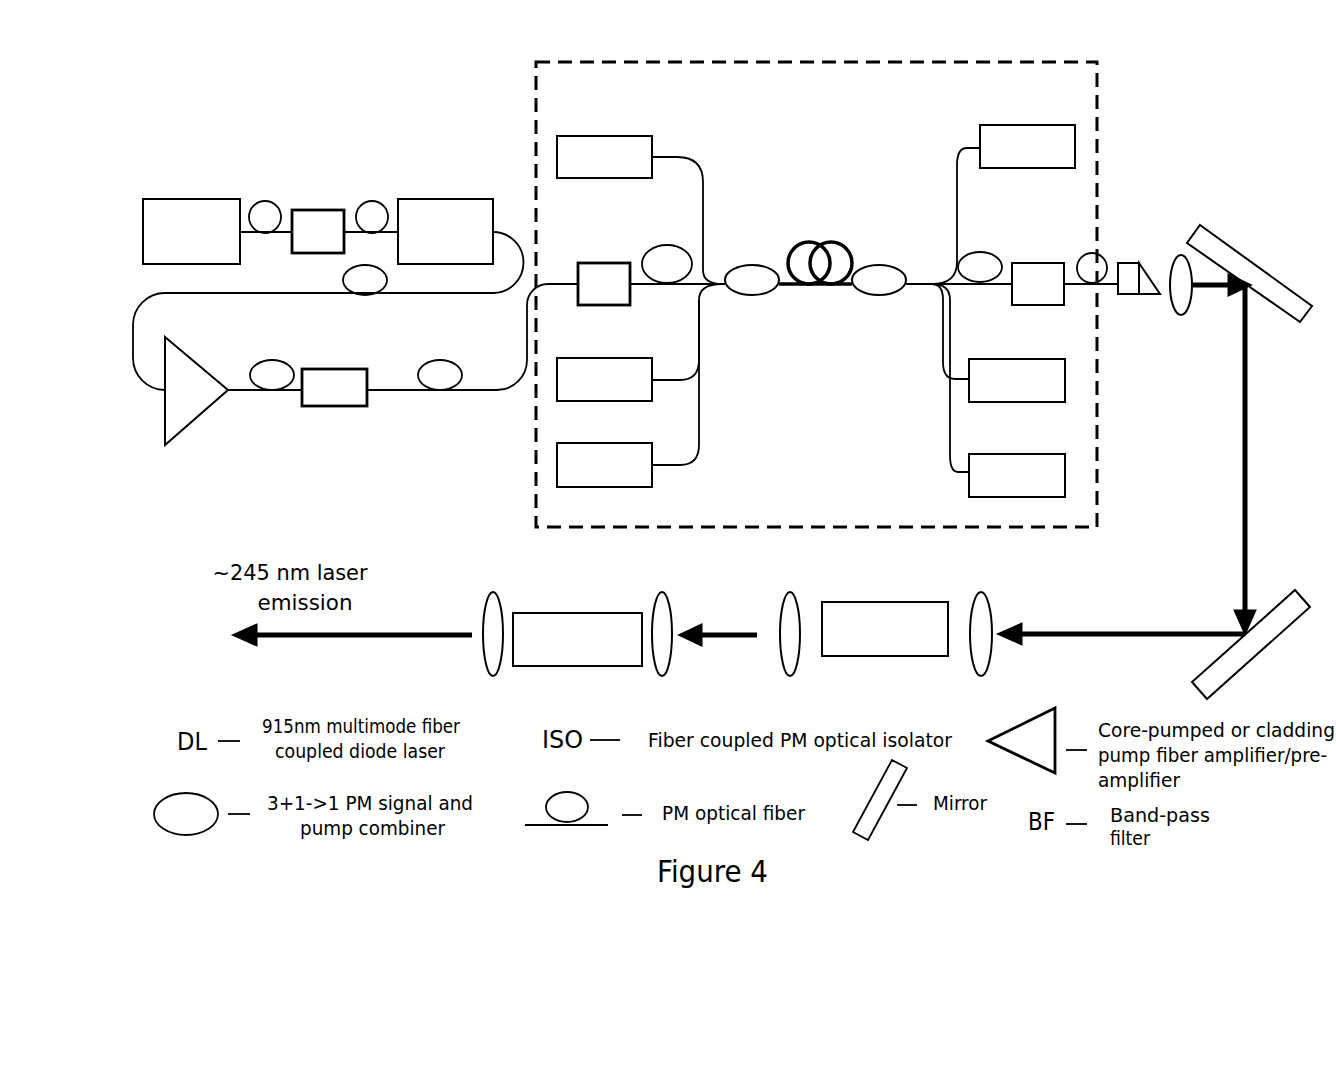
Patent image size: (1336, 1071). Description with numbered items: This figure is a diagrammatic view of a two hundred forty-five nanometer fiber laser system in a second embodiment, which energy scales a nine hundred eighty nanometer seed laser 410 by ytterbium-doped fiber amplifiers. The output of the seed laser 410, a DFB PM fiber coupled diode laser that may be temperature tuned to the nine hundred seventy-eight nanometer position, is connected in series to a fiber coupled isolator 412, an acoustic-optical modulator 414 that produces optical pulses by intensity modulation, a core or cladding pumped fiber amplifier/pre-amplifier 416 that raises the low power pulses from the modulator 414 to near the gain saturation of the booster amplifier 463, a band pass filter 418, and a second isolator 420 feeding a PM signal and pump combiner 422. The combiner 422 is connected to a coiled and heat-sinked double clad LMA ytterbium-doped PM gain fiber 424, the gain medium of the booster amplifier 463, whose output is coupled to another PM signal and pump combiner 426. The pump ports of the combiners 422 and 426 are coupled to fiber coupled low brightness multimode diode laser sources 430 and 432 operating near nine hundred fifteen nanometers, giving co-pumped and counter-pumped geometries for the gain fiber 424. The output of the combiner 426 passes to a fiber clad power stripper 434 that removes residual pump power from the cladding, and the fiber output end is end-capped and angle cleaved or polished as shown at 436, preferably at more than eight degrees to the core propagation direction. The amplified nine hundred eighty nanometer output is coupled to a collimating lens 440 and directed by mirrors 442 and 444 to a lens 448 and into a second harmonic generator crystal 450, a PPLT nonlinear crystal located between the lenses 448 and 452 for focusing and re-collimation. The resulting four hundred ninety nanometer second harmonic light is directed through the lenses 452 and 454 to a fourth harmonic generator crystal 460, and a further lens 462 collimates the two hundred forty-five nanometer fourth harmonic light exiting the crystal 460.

The seed laser 410 is at (193, 200).
The fiber coupled isolator 412 is at (322, 210).
The acoustic-optical modulator 414 is at (428, 200).
The fiber amplifier/pre-amplifier 416 is at (185, 348).
The band pass filter 418 is at (322, 370).
The second isolator 420 is at (608, 263).
The PM signal and pump combiner 422 is at (758, 263).
The Yb-doped gain fiber 424 is at (830, 242).
The PM signal and pump combiner 426 is at (893, 265).
The diode laser sources 430 is at (627, 138).
The diode laser sources 432 is at (1033, 125).
The fiber clad power stripper 434 is at (1055, 263).
The end-capped, angle cleaved or polished output end 436 is at (1132, 263).
The collimating lens 440 is at (1180, 318).
The mirror 442 is at (1225, 242).
The mirror 444 is at (1238, 672).
The lens 448 is at (978, 590).
The second harmonic generator crystal 450 is at (865, 602).
The lens 452 is at (788, 593).
The lens 454 is at (656, 593).
The fourth harmonic generator crystal 460 is at (550, 617).
The lens 462 is at (486, 593).
The booster amplifier 463 is at (627, 62).